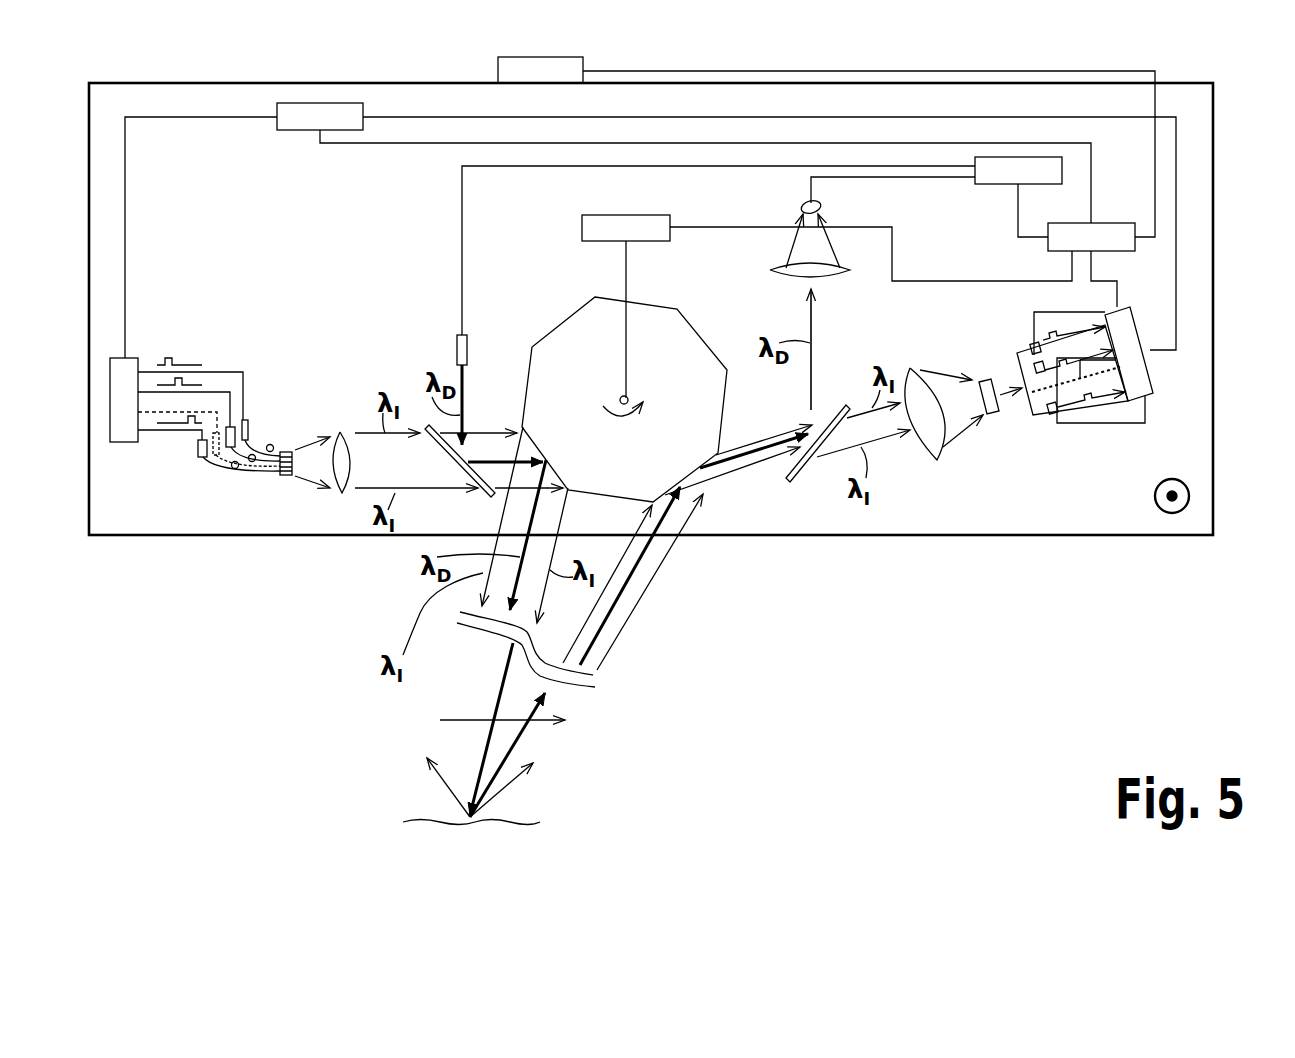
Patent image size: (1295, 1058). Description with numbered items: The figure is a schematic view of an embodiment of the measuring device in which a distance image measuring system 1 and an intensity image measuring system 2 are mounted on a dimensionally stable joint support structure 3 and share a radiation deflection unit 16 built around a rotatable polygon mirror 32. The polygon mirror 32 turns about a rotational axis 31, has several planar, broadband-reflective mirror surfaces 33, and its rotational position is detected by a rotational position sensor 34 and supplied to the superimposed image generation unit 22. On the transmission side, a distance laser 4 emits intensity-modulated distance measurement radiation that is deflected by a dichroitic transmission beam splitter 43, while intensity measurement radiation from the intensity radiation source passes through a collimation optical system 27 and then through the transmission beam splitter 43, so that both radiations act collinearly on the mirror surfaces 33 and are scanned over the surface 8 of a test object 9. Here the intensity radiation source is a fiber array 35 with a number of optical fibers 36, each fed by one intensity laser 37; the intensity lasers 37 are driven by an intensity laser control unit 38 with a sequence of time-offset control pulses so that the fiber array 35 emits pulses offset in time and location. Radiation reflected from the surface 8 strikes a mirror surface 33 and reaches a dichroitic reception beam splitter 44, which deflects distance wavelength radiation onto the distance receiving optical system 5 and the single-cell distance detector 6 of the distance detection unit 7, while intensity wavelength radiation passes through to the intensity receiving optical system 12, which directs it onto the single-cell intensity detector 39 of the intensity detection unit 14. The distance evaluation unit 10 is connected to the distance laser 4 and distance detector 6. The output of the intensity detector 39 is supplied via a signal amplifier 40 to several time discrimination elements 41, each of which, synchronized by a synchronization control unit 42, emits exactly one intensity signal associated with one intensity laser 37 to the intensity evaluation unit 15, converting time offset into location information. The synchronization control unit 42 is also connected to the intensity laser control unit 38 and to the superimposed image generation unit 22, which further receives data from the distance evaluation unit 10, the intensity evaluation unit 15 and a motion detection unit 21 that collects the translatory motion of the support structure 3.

The distance image measuring system 1 is at (430, 235).
The intensity image measuring system 2 is at (227, 255).
The support structure 3 is at (1182, 82).
The distance laser 4 is at (457, 350).
The distance receiving optical system 5 is at (795, 279).
The distance detector 6 is at (803, 206).
The distance detection unit 7 is at (848, 251).
The surface 8 is at (530, 816).
The test object 9 is at (427, 821).
The distance evaluation unit 10 is at (990, 175).
The intensity receiving optical system 12 is at (932, 445).
The intensity detection unit 14 is at (1040, 432).
The intensity evaluation unit 15 is at (1143, 390).
The radiation deflection unit 16 is at (532, 243).
The motion detection unit 21 is at (510, 71).
The superimposed image generation unit 22 is at (1108, 233).
The collimation optical system 27 is at (347, 448).
The rotational axis 31 is at (628, 398).
The polygon mirror 32 is at (580, 330).
The mirror surfaces 33 is at (698, 330).
The rotational position sensor 34 is at (615, 217).
The fiber array 35 is at (286, 451).
The optical fibers 36 is at (270, 445).
The intensity lasers 37 is at (249, 425).
The intensity laser control unit 38 is at (125, 367).
The intensity detector 39 is at (996, 412).
The signal amplifier 40 is at (1010, 382).
The time discrimination elements 41 is at (1034, 345).
The synchronization control unit 42 is at (292, 122).
The transmission beam splitter 43 is at (427, 427).
The reception beam splitter 44 is at (842, 405).